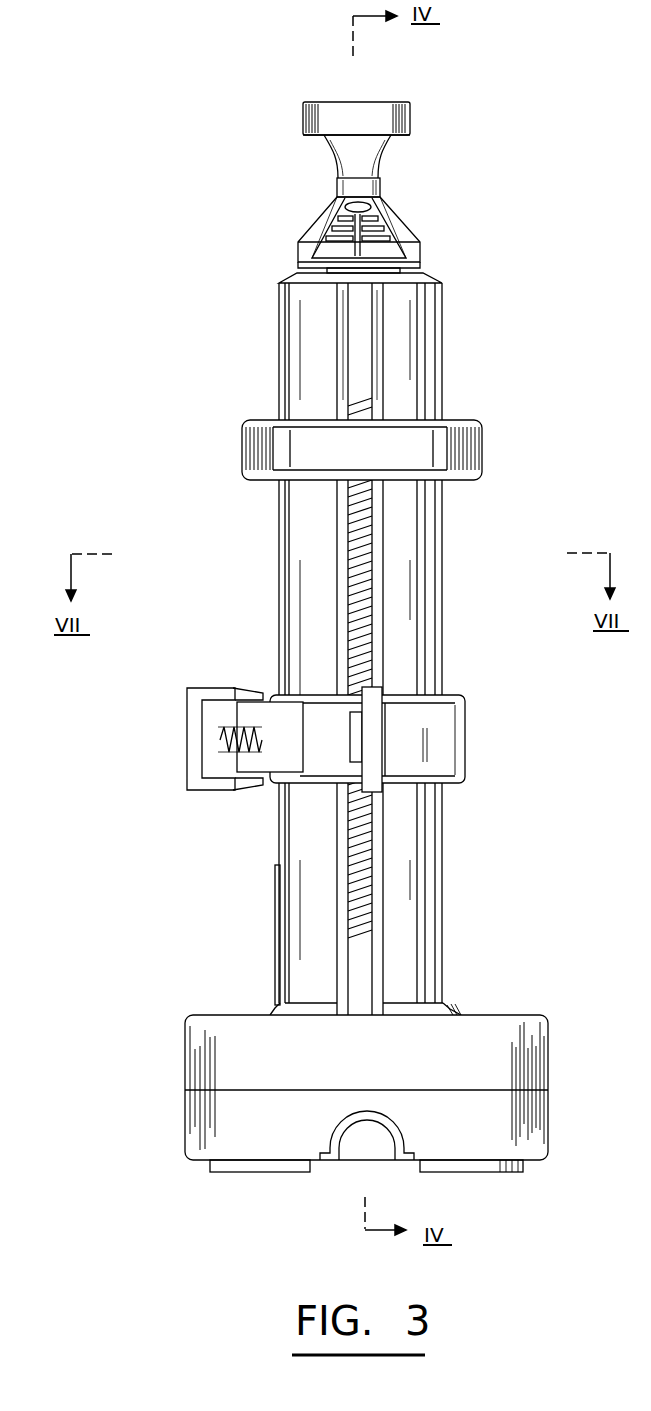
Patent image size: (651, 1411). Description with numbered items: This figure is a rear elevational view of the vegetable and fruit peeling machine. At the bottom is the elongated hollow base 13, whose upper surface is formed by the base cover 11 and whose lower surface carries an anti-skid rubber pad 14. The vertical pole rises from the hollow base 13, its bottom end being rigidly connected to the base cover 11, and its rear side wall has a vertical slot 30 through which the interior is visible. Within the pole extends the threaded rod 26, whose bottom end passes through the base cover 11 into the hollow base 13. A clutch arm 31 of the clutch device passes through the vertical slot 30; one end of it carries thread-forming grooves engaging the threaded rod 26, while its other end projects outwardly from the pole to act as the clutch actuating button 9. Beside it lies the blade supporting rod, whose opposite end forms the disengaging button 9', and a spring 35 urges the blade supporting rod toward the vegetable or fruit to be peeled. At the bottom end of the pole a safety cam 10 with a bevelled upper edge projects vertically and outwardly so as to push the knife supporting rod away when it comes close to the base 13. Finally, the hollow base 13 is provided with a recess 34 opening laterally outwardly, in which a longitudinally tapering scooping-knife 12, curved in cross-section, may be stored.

The clutch actuating button 9 is at (382, 701).
The disengaging button 9' is at (210, 708).
The safety cam 10 is at (278, 903).
The base cover 11 is at (517, 1043).
The scooping-knife 12 is at (367, 1143).
The hollow base 13 is at (205, 1113).
The anti-skid rubber pad 14 is at (525, 1165).
The threaded rod 26 is at (368, 555).
The vertical slot 30 is at (360, 356).
The clutch arm 31 is at (365, 792).
The recess 34 is at (372, 1118).
The spring 35 is at (241, 790).